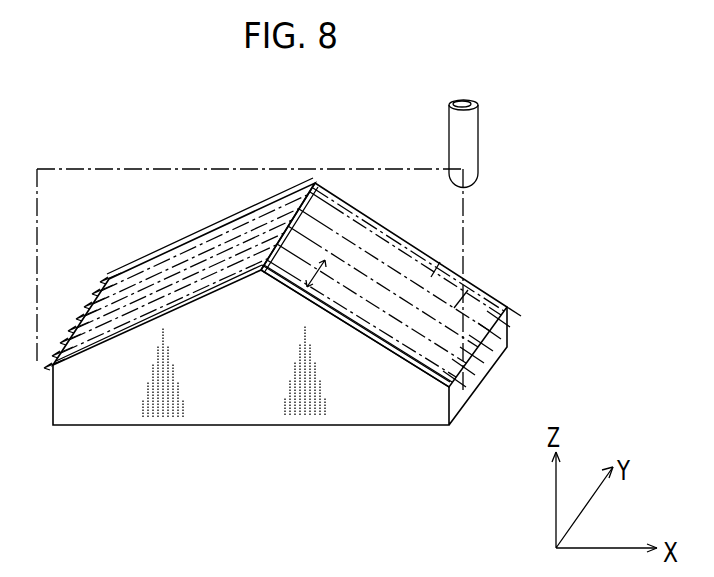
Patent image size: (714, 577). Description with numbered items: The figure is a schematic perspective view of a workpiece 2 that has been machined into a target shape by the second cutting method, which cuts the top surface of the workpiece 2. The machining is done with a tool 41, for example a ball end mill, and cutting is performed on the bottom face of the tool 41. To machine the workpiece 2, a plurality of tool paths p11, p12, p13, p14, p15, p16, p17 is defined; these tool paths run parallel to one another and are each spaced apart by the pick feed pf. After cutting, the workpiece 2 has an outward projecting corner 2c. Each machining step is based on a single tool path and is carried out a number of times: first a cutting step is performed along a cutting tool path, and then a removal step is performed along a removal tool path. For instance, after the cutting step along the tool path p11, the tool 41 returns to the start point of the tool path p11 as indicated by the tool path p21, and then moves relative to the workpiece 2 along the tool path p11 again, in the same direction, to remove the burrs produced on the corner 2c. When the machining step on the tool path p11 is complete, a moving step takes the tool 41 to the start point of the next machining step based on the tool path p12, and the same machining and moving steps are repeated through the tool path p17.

The workpiece 2 is at (95, 408).
The outward projecting corner 2c is at (253, 280).
The tool path p21 is at (140, 168).
The tool 41 is at (463, 133).
The tool path p17 is at (402, 235).
The tool path p16 is at (440, 262).
The tool path p15 is at (463, 288).
The tool path p14 is at (363, 275).
The tool path p13 is at (368, 296).
The tool path p12 is at (393, 332).
The tool path p11 is at (421, 367).
The pick feed pf is at (307, 284).